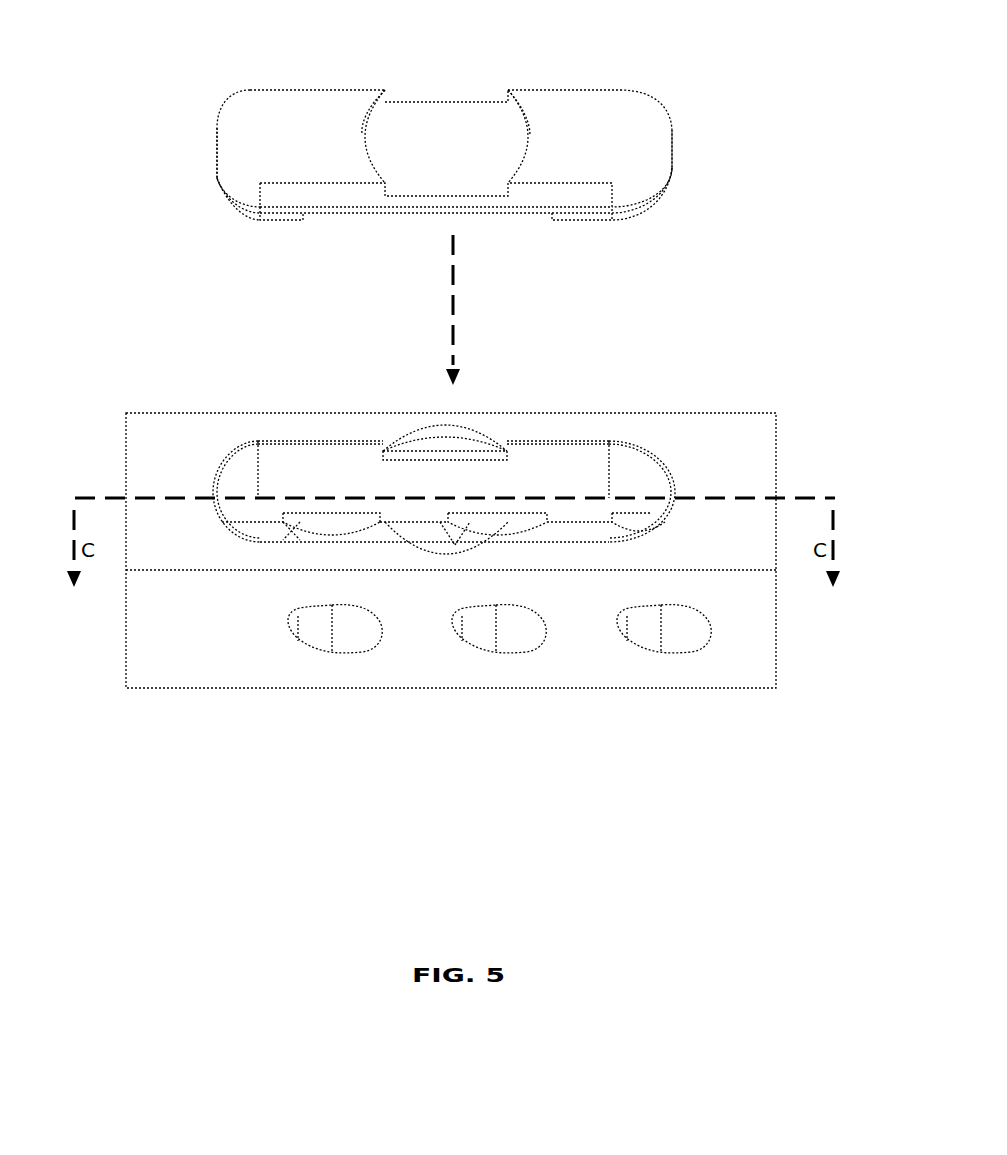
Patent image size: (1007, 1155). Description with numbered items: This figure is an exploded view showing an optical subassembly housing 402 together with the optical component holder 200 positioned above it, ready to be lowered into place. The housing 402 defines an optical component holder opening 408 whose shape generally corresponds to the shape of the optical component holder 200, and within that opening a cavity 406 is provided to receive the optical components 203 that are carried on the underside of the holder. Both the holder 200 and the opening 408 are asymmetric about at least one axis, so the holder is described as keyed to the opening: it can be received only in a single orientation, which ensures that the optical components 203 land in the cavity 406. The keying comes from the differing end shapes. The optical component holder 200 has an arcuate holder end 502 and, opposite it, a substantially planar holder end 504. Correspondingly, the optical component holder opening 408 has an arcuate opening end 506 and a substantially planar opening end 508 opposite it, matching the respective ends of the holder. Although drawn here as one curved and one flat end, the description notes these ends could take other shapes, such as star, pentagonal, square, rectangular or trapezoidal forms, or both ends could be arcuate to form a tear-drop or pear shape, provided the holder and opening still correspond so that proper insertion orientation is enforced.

The optical component holder 200 is at (450, 155).
The optical components 203 is at (598, 240).
The optical subassembly housing 402 is at (752, 658).
The cavity 406 is at (470, 468).
The optical component holder opening 408 is at (609, 441).
The arcuate holder end 502 is at (680, 122).
The substantially planar holder end 504 is at (212, 125).
The arcuate opening end 506 is at (690, 482).
The substantially planar opening end 508 is at (206, 476).